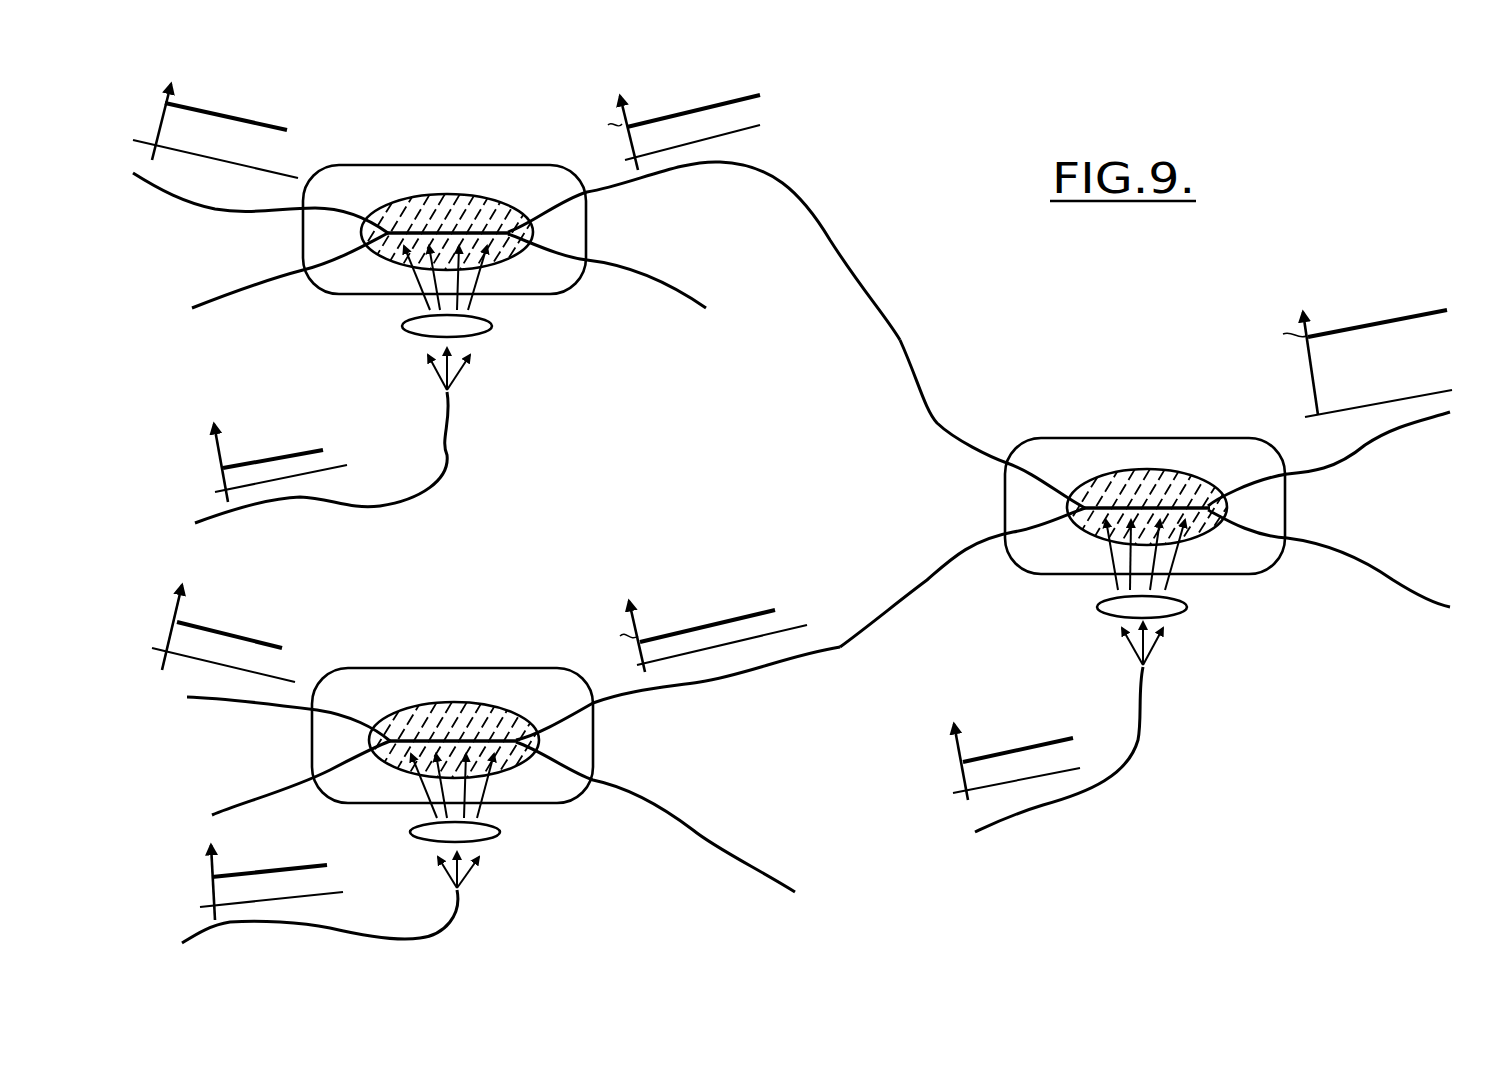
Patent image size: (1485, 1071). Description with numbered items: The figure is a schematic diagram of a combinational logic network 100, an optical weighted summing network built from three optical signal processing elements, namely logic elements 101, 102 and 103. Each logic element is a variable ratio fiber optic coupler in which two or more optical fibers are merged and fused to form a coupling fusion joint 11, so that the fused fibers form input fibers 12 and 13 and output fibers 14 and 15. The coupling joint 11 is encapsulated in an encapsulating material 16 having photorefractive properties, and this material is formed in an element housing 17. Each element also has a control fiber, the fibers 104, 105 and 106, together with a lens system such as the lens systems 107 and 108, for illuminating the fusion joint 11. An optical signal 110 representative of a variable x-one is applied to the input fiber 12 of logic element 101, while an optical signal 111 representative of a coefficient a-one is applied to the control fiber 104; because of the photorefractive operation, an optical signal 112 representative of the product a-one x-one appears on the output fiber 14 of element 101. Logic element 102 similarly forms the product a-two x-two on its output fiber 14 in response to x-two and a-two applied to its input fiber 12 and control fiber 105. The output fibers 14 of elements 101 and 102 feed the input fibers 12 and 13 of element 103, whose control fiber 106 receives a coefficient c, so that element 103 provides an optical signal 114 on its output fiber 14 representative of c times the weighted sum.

The coupling fusion joint 11 is at (432, 228).
The input fiber 12 is at (208, 210).
The input fiber 13 is at (244, 297).
The output fiber 14 is at (688, 173).
The output fiber 15 is at (690, 297).
The encapsulating material 16 is at (492, 172).
The element housing 17 is at (365, 165).
The combinational logic network 100 is at (792, 433).
The logic element 101 is at (572, 314).
The logic element 102 is at (568, 584).
The logic element 103 is at (1016, 428).
The control fiber 104 is at (366, 507).
The control fiber 105 is at (370, 936).
The control fiber 106 is at (1142, 730).
The lens system 107 is at (402, 326).
The lens system 108 is at (500, 832).
The optical signal 110 is at (240, 118).
The optical signal 111 is at (276, 460).
The optical signal 112 is at (675, 118).
The optical signal 114 is at (1390, 320).